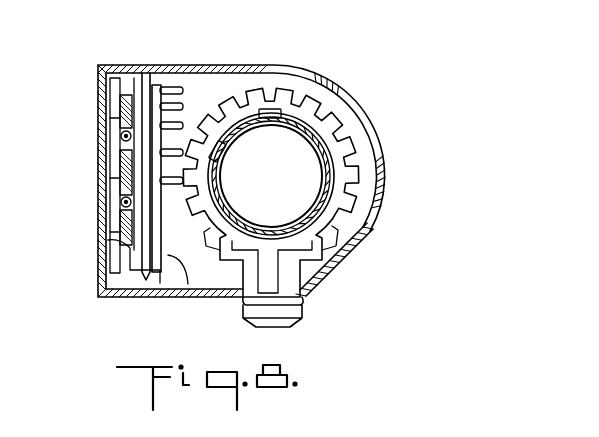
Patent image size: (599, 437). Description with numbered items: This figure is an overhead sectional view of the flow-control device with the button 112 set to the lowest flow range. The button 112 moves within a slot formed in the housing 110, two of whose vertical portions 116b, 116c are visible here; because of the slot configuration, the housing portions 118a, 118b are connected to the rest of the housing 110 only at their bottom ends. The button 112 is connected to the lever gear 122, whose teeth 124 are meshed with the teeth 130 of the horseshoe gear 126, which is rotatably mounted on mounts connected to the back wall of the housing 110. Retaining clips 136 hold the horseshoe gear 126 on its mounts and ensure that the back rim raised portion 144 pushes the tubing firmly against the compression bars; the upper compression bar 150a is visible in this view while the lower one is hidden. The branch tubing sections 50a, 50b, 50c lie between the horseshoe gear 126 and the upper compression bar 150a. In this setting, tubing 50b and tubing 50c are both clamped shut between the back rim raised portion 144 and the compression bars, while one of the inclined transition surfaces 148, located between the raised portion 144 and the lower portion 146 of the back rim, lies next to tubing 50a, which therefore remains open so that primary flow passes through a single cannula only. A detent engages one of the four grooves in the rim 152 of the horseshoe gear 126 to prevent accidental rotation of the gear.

The housing 110 is at (332, 85).
The button 112 is at (292, 307).
The vertical slot portion 116b is at (372, 232).
The vertical slot portion 116c is at (364, 125).
The housing portion 118a is at (336, 266).
The housing portion 118b is at (382, 184).
The lever gear 122 is at (277, 171).
The teeth 124 is at (232, 92).
The horseshoe gear 126 is at (183, 292).
The teeth 130 is at (175, 85).
The retaining clips 136 is at (118, 148).
The back rim raised portion 144 is at (120, 256).
The back rim lower portion 146 is at (136, 86).
The inclined transition surface 148 is at (186, 268).
The upper compression bar 150a is at (110, 136).
The rim 152 is at (152, 283).
The branch tubing section 50a is at (104, 117).
The branch tubing section 50b is at (108, 178).
The branch tubing section 50c is at (112, 224).